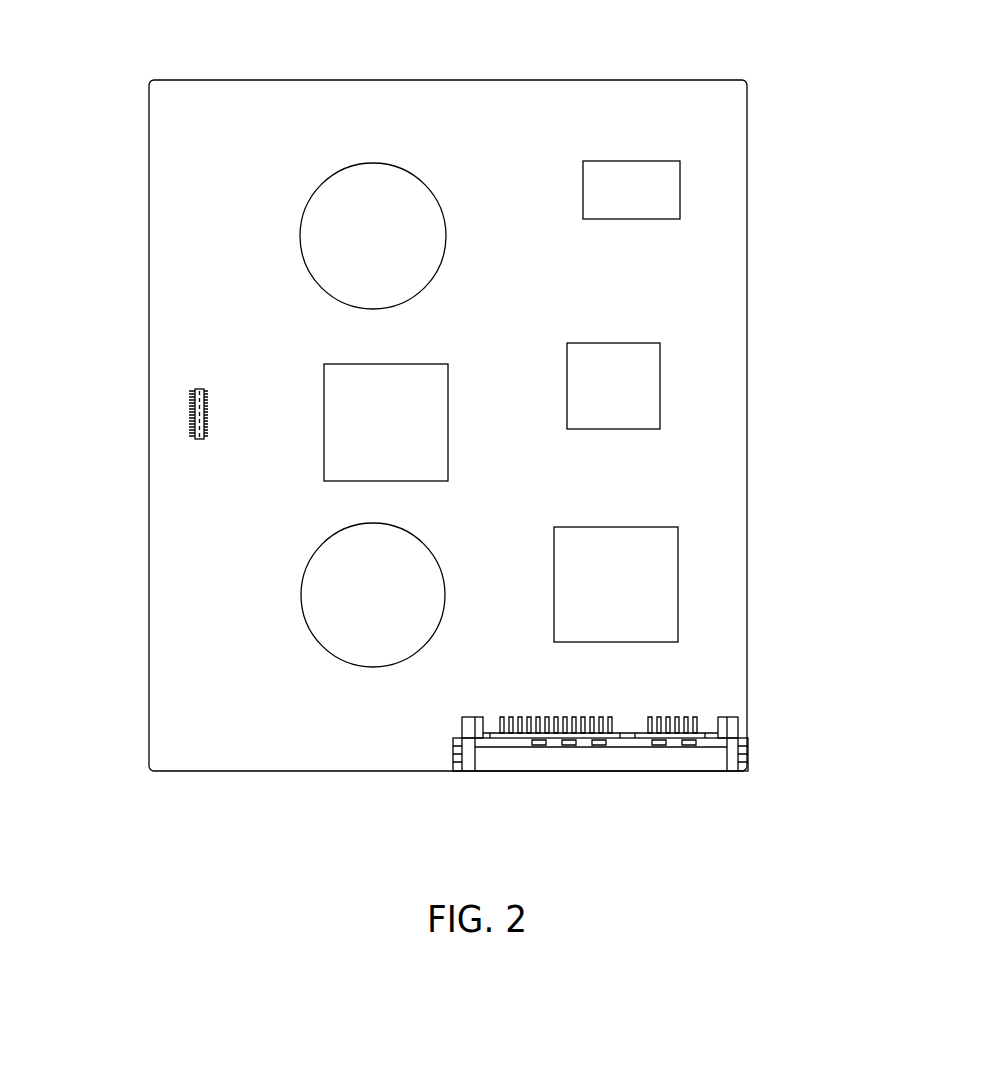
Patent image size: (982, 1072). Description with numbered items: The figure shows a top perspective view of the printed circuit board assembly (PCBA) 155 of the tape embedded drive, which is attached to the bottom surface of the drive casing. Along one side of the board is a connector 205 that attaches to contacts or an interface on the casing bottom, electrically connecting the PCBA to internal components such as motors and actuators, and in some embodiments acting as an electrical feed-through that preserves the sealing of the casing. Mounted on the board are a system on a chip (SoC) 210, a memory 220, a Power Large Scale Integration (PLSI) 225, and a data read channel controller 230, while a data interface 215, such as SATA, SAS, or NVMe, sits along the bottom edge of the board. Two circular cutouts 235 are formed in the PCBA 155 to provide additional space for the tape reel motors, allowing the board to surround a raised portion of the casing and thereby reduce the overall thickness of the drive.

The printed circuit board assembly 155 is at (715, 107).
The connector 205 is at (189, 404).
The system on a chip 210 is at (653, 585).
The data interface 215 is at (616, 771).
The memory 220 is at (660, 185).
The Power Large Scale Integration 225 is at (645, 372).
The data read channel controller 230 is at (323, 378).
The cutout 235 is at (325, 228).